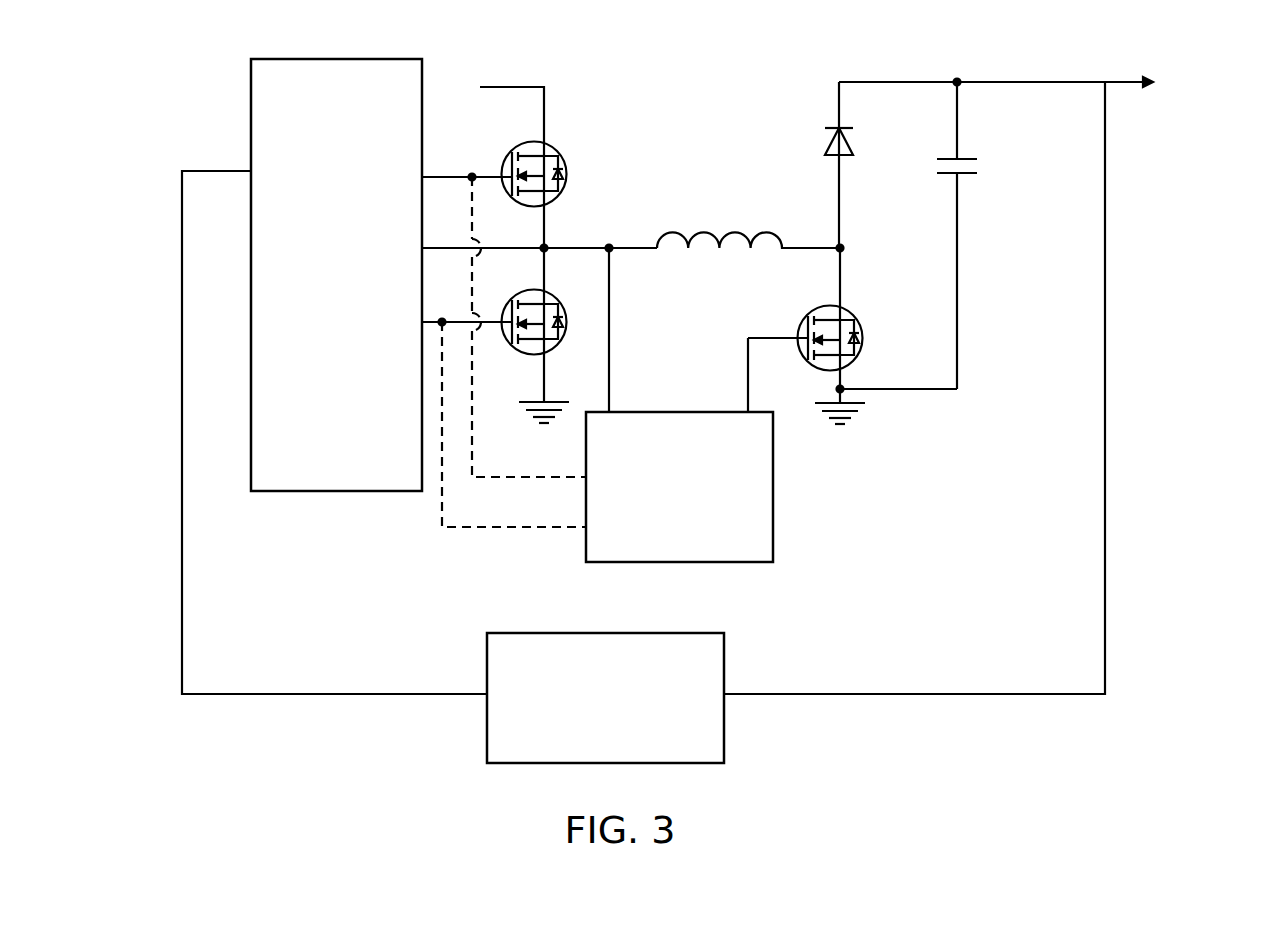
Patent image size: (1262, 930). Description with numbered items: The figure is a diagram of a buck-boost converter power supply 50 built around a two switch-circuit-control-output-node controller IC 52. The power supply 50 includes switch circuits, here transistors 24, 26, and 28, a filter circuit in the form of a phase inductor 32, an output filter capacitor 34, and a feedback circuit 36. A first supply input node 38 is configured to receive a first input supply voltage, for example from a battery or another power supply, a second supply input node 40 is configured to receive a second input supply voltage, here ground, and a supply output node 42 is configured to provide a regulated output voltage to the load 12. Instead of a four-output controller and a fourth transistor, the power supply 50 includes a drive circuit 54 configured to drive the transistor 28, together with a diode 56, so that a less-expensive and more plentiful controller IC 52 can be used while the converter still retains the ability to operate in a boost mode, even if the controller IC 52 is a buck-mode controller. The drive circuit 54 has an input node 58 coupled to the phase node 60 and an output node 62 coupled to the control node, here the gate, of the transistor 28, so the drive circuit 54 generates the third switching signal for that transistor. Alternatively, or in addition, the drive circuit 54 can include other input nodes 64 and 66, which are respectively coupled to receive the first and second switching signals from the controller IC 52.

The controller IC 52 is at (338, 59).
The first supply input node 38 is at (546, 104).
The transistor 24 is at (556, 157).
The transistor 26 is at (543, 292).
The phase node 60 is at (611, 247).
The phase inductor 32 is at (705, 232).
The diode 56 is at (825, 144).
The supply output node 42 is at (1017, 82).
The load 12 is at (1205, 95).
The output filter capacitor 34 is at (977, 158).
The transistor 28 is at (850, 312).
The second supply input node 40 is at (915, 391).
The drive circuit 54 is at (775, 488).
The input node 58 is at (611, 388).
The output node 62 is at (750, 412).
The input node 64 is at (586, 477).
The input node 66 is at (586, 527).
The feedback circuit 36 is at (605, 633).
The buck-boost converter power supply 50 is at (198, 766).